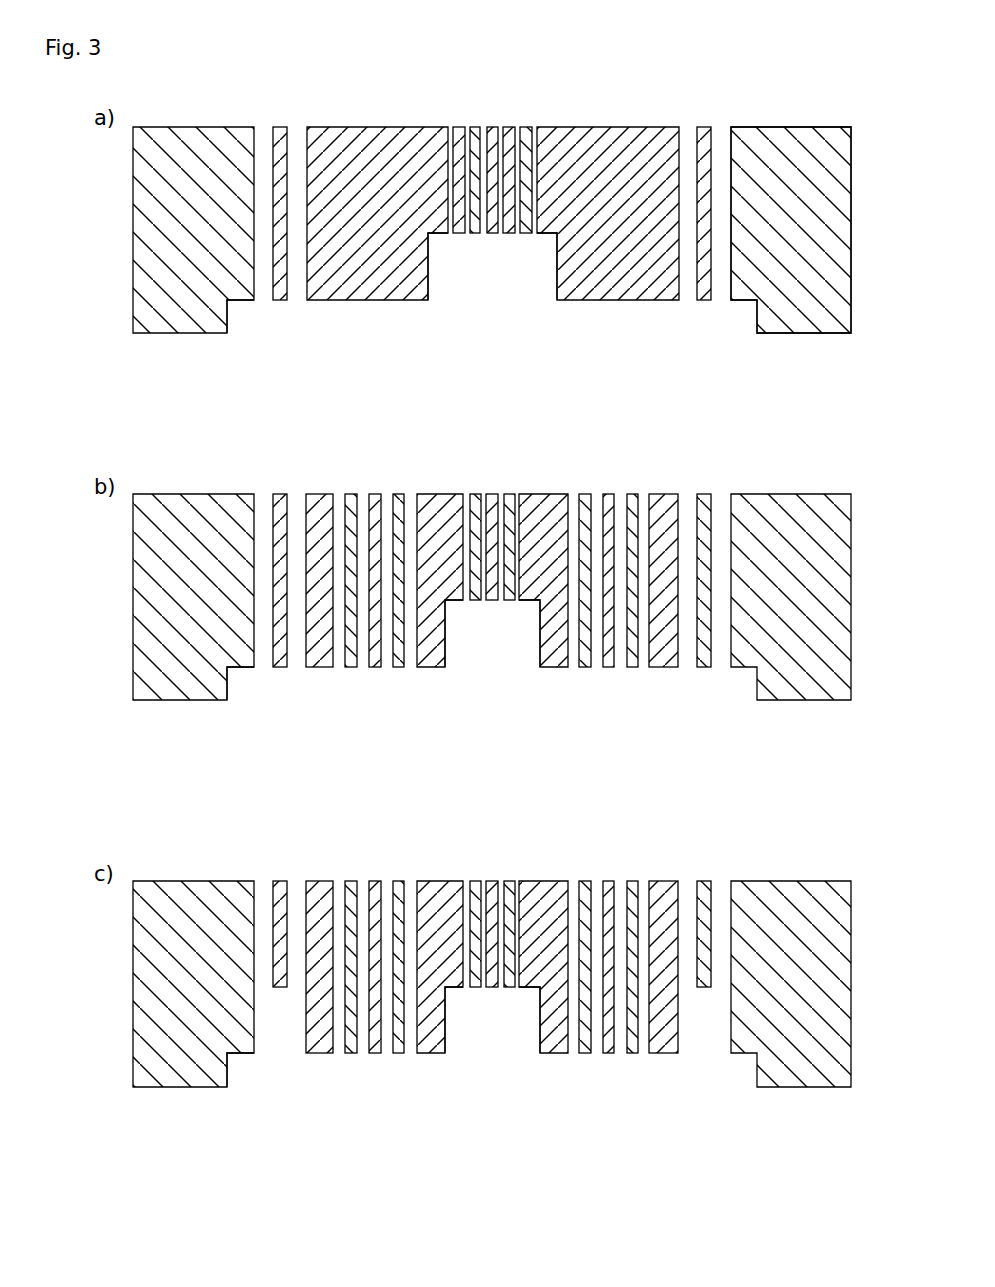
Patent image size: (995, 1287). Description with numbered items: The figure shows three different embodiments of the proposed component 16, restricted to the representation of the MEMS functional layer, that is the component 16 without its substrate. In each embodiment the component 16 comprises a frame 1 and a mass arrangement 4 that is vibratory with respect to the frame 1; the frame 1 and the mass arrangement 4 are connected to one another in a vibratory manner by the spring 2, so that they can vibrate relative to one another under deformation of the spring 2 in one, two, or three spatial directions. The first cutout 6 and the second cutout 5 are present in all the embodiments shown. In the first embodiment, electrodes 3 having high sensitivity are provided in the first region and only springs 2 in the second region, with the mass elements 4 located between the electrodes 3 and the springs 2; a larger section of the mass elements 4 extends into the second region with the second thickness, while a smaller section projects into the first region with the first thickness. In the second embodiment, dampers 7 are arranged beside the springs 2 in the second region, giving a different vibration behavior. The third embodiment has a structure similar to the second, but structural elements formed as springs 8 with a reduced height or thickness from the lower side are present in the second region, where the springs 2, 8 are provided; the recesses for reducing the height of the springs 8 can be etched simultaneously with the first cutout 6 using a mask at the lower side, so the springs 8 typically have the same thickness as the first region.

In FIG. 3a, the frame 1 is at (173, 133).
In FIG. 3b, the frame 1 is at (183, 502).
In FIG. 3c, the frame 1 is at (183, 890).
In FIG. 3a, the spring 2 is at (277, 133).
In FIG. 3b, the spring 2 is at (277, 500).
In FIG. 3a, the electrodes 3 is at (492, 133).
In FIG. 3b, the electrodes 3 is at (492, 500).
In FIG. 3c, the electrodes 3 is at (493, 885).
In FIG. 3a, the mass arrangement 4 is at (563, 135).
In FIG. 3b, the mass arrangement 4 is at (543, 502).
In FIG. 3c, the mass arrangement 4 is at (543, 890).
In FIG. 3a, the second cutout 5 is at (240, 317).
In FIG. 3b, the second cutout 5 is at (240, 684).
In FIG. 3c, the second cutout 5 is at (240, 1071).
In FIG. 3a, the first cutout 6 is at (444, 273).
In FIG. 3b, the first cutout 6 is at (457, 640).
In FIG. 3c, the first cutout 6 is at (456, 1027).
In FIG. 3b, the dampers 7 is at (630, 502).
In FIG. 3c, the dampers 7 is at (608, 890).
In FIG. 3c, the springs 8 is at (277, 887).
In FIG. 3a, the component 16 is at (780, 119).
In FIG. 3b, the component 16 is at (775, 487).
In FIG. 3c, the component 16 is at (768, 874).